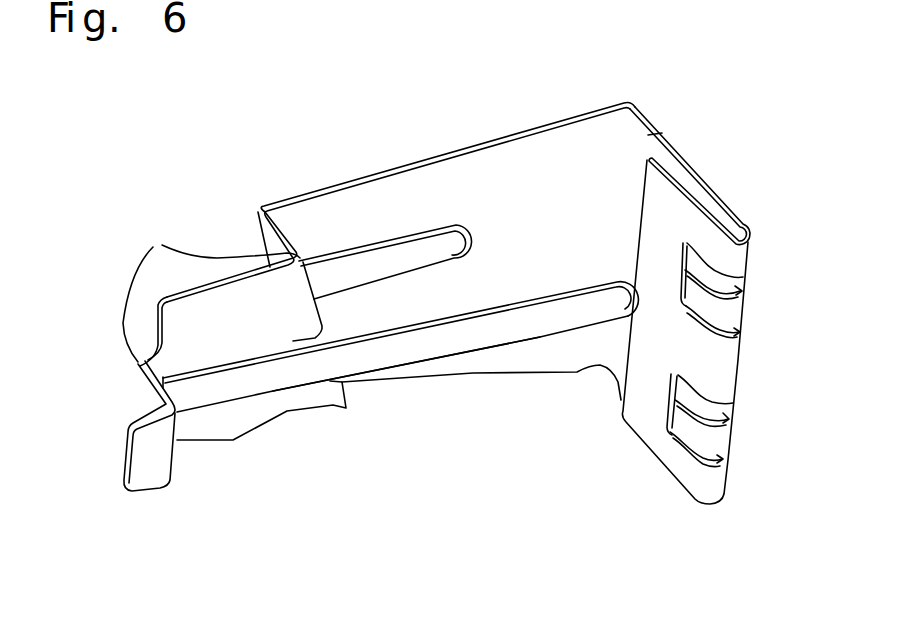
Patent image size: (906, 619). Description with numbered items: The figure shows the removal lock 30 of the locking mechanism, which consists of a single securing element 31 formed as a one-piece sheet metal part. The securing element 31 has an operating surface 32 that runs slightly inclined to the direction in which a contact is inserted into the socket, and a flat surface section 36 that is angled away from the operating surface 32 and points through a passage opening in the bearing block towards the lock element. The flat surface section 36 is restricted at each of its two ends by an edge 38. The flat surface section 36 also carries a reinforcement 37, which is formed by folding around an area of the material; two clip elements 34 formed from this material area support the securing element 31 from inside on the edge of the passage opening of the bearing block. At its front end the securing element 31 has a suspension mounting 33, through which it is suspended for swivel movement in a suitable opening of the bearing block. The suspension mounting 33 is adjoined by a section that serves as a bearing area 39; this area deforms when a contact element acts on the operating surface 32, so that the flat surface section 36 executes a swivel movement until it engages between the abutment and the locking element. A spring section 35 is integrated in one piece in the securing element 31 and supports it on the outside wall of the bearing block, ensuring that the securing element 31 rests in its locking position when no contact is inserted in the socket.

The removal lock 30 is at (268, 173).
The securing element 31 is at (437, 157).
The operating surface 32 is at (503, 163).
The suspension mounting 33 is at (160, 452).
The clip elements 34 is at (716, 432).
The spring section 35 is at (500, 350).
The flat surface section 36 is at (691, 198).
The reinforcement 37 is at (683, 230).
The edge 38 is at (662, 133).
The bearing area 39 is at (257, 207).